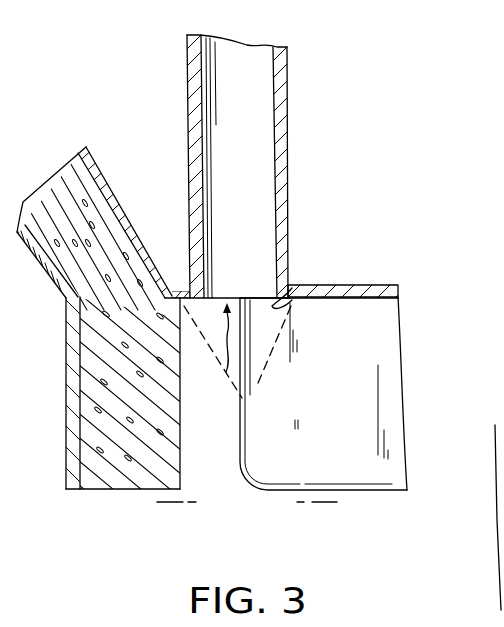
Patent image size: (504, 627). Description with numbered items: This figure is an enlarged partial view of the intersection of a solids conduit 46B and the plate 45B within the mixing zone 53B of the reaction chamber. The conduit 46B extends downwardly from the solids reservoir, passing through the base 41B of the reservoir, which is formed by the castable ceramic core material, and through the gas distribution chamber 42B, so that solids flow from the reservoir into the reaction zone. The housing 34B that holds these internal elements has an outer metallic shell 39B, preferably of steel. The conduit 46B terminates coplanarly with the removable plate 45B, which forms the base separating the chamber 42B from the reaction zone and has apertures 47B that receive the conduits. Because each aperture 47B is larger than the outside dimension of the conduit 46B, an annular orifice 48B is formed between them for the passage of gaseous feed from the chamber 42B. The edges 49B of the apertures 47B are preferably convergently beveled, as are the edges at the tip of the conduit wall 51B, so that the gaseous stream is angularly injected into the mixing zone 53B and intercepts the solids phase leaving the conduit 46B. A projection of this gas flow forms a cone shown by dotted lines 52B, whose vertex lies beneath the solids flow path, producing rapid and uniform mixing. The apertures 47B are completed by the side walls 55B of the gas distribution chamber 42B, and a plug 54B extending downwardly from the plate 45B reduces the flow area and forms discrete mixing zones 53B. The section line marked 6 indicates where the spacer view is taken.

The base of the reservoir 41B is at (53, 185).
The side walls of gas distribution chamber 55B is at (110, 178).
The housing 34B is at (52, 297).
The outer metallic shell 39B is at (67, 437).
The mixing zone 53B is at (232, 432).
The gas distribution chamber 42B is at (178, 200).
The conduit wall 51B is at (289, 114).
The conduit 46B is at (260, 205).
The plate 45B is at (336, 286).
The annular orifice 48B is at (292, 288).
The edges of the apertures 49B is at (293, 302).
The plug 54B is at (391, 347).
The aperture 47B is at (210, 343).
The dotted lines 52B is at (266, 378).
The section line 6- 6 is at (168, 510).